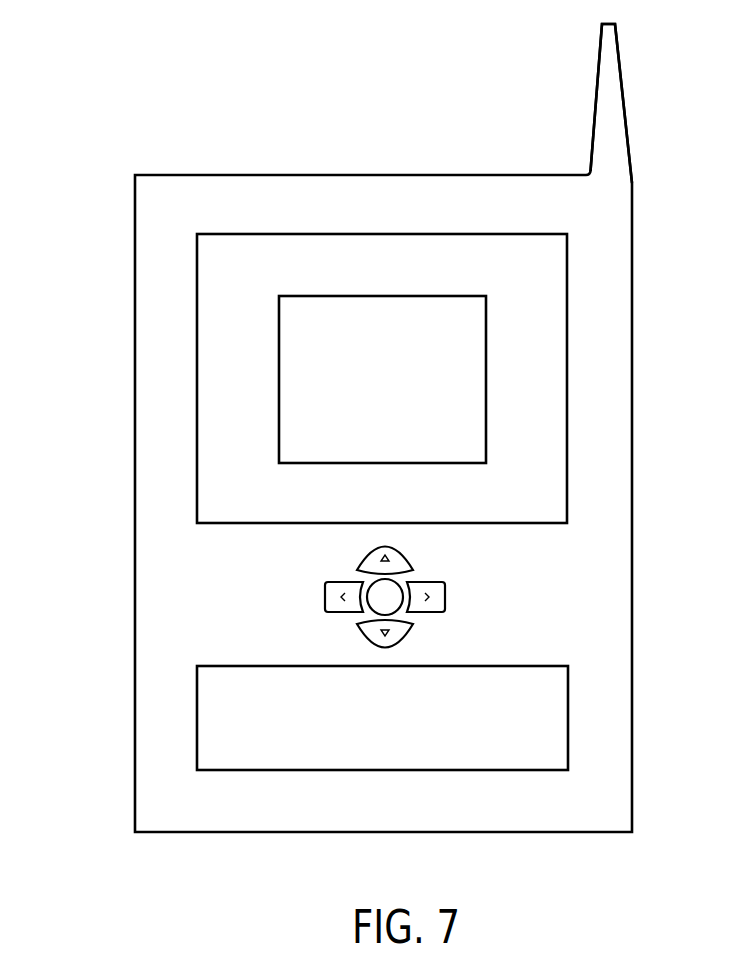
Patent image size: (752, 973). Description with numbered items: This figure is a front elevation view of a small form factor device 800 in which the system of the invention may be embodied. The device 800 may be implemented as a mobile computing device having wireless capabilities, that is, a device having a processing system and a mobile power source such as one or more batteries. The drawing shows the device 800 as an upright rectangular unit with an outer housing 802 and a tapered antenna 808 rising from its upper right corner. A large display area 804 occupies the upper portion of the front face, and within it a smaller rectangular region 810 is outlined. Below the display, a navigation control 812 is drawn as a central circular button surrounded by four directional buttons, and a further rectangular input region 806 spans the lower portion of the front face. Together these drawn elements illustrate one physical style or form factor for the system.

The small form factor device 800 is at (137, 120).
The housing 802 is at (135, 588).
The display 804 is at (568, 288).
The input area / keypad 806 is at (568, 717).
The antenna 808 is at (595, 99).
The display window 810 is at (383, 296).
The navigation pad 812 is at (475, 598).